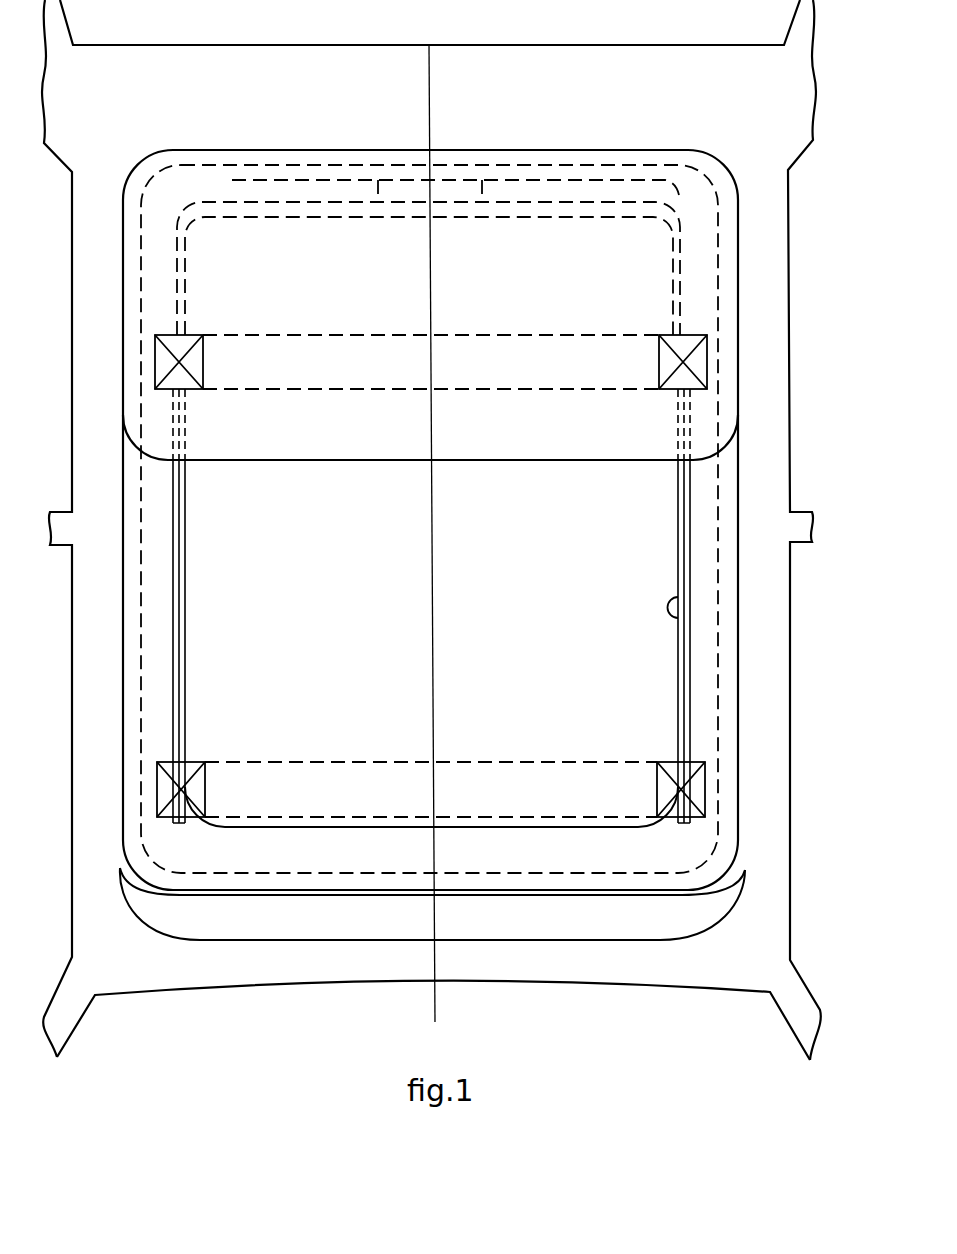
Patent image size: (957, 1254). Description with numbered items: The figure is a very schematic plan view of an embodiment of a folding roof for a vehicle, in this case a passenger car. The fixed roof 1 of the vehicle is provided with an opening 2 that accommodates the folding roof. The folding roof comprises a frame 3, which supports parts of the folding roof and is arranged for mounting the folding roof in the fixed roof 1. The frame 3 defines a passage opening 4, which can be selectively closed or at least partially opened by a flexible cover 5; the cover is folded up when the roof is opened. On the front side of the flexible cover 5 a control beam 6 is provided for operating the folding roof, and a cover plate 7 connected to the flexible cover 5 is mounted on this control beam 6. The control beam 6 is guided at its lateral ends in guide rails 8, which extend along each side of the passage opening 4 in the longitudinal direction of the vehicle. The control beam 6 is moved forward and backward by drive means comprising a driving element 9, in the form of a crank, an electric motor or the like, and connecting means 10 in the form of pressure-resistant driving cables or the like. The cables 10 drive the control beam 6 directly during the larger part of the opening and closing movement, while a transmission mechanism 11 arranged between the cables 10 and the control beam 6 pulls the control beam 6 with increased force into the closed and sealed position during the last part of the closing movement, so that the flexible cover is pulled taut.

The roof 1 is at (781, 670).
The opening 2 is at (712, 733).
The frame 3 is at (698, 643).
The passage opening 4 is at (668, 597).
The flexible cover 5 is at (650, 270).
The control beam 6 is at (637, 370).
The cover plate 7 is at (590, 412).
The guide rails 8 is at (180, 607).
The driving element 9 is at (475, 180).
The connecting means 10 is at (620, 198).
The transmission mechanism 11 is at (165, 368).